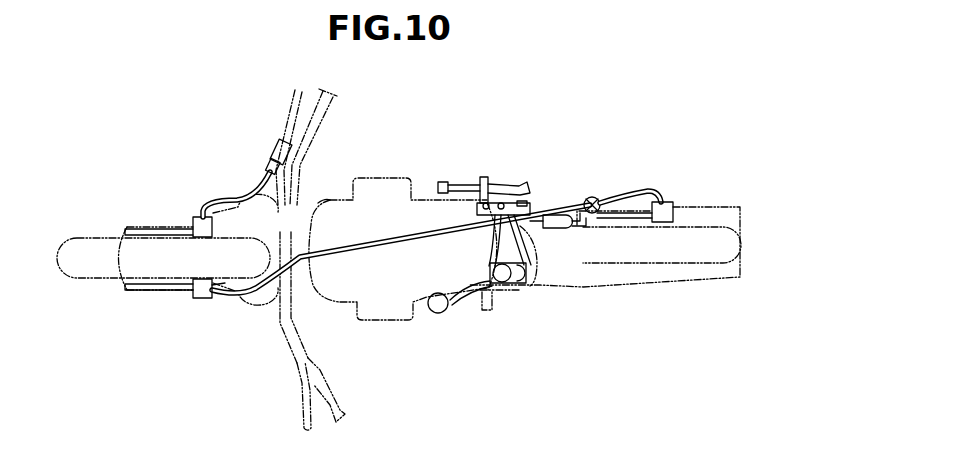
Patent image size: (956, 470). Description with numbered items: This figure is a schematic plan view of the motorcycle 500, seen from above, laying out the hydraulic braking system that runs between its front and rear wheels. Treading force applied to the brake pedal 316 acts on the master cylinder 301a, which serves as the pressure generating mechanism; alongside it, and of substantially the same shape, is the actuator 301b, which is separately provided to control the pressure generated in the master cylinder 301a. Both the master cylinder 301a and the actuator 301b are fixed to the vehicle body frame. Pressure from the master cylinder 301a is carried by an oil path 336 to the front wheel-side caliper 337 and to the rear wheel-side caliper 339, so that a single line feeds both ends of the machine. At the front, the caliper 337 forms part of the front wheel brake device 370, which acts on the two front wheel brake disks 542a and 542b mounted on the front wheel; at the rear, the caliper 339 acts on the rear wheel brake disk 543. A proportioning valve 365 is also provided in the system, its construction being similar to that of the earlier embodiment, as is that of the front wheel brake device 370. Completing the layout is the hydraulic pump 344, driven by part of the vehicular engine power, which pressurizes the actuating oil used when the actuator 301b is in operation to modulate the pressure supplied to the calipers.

The front wheel brake device 370 is at (273, 133).
The front wheel brake disk 542b is at (150, 230).
The front wheel brake disk 542a is at (160, 297).
The front wheel-side caliper 337 is at (201, 300).
The motorcycle 500 is at (365, 176).
The brake pedal 316 is at (459, 181).
The actuator 301b is at (494, 203).
The master cylinder 301a is at (563, 230).
The oil path 336 is at (357, 245).
The hydraulic pump 344 is at (438, 313).
The proportioning valve 365 is at (597, 197).
The rear wheel brake disk 543 is at (648, 200).
The rear wheel-side caliper 339 is at (668, 206).